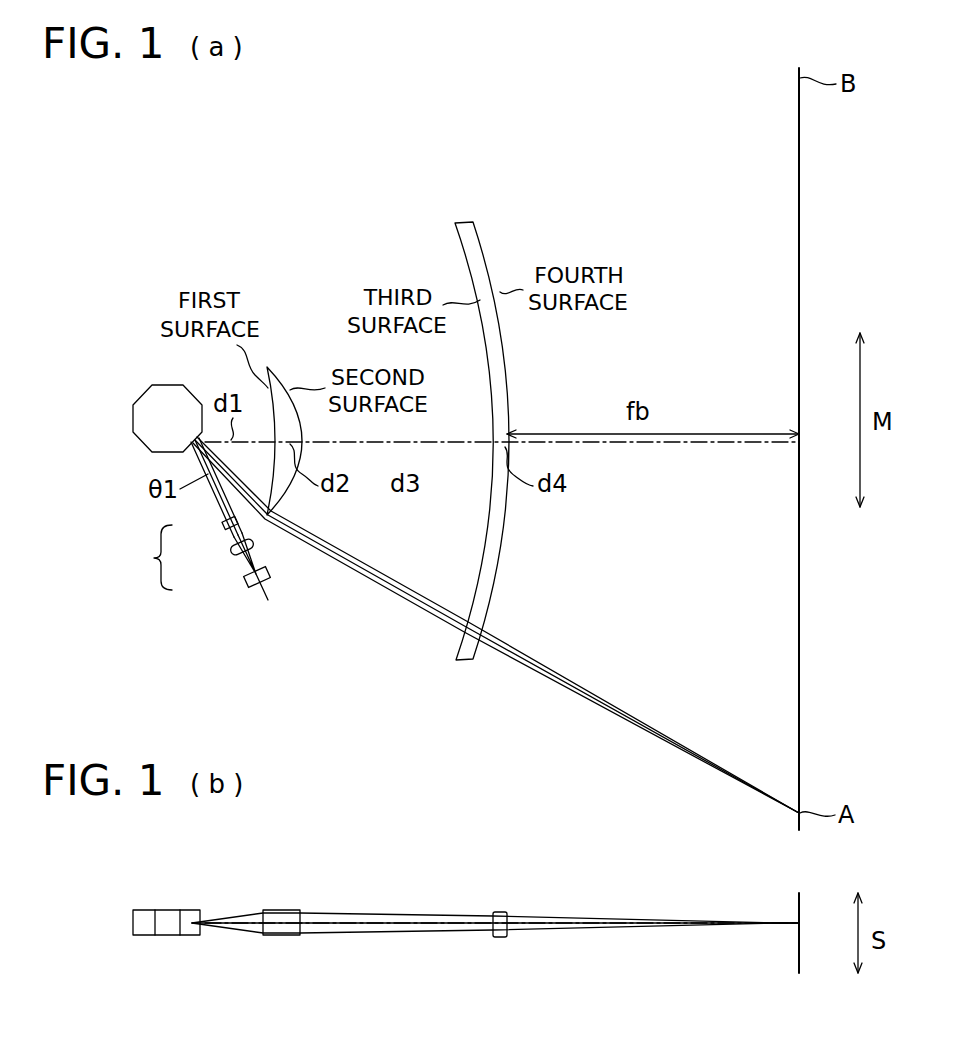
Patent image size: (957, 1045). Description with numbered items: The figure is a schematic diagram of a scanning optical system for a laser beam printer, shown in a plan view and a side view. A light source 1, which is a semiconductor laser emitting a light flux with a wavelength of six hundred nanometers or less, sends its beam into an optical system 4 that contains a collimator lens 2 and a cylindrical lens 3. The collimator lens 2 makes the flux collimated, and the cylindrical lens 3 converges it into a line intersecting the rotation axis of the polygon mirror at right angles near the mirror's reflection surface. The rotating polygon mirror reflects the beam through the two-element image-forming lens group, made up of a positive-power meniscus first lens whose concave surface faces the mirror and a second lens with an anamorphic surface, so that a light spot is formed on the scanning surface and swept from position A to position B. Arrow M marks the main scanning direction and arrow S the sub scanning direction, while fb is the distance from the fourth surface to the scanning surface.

The light source 1 is at (251, 585).
The collimator lens 2 is at (236, 552).
The cylindrical lens 3 is at (222, 525).
The optical system 4 is at (150, 557).